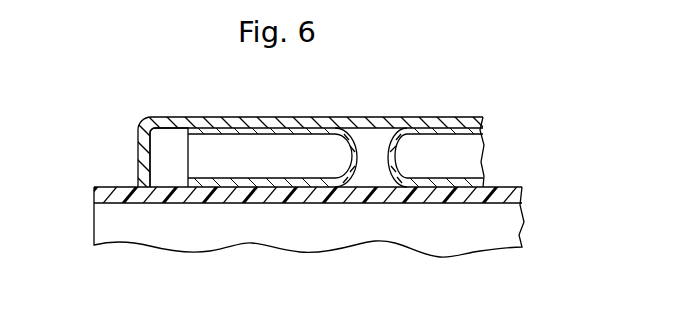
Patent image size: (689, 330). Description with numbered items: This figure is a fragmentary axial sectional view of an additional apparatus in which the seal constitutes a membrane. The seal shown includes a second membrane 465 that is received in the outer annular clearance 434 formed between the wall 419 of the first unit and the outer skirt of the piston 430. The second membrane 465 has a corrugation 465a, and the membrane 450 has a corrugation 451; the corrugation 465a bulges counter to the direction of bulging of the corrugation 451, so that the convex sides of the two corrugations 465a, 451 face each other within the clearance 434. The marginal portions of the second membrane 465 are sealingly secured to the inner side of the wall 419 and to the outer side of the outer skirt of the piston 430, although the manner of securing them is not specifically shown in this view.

The wall of the first unit 419 is at (438, 118).
The piston 430 is at (242, 251).
The outer annular clearance 434 is at (363, 148).
The membrane 450 is at (510, 132).
The corrugation of the membrane 451 is at (398, 160).
The second membrane 465 is at (179, 142).
The corrugation of the second membrane 465a is at (355, 166).